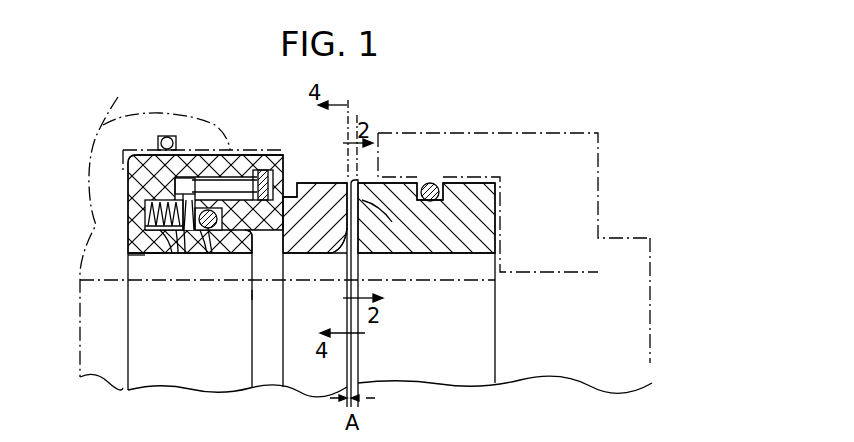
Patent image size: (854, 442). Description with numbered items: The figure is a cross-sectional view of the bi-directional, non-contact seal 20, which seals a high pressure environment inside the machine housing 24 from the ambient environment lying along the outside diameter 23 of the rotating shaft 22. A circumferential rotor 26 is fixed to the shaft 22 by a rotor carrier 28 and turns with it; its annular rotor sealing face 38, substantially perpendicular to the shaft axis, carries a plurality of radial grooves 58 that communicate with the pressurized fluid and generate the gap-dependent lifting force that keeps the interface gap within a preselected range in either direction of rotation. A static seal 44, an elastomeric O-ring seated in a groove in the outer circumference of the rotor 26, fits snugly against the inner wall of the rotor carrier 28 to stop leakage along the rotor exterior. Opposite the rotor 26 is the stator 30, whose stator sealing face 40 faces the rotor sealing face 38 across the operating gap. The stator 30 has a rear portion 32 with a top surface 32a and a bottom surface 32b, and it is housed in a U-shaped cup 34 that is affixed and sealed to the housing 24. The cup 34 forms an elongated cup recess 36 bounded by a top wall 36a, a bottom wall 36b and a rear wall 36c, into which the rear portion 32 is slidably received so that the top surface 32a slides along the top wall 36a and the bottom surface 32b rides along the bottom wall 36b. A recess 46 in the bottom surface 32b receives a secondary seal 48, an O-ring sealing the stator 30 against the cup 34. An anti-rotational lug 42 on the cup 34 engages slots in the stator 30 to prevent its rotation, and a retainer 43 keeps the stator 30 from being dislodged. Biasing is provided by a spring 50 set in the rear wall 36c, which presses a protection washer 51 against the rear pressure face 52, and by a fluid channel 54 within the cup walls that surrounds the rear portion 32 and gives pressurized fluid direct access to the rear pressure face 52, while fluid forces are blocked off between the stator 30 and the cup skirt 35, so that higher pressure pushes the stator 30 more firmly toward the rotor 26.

The bi-directional, non-contact seal 20 is at (535, 83).
The rotating shaft 22 is at (652, 363).
The outside diameter of shaft 23 is at (80, 272).
The machine housing 24 is at (181, 226).
The circumferential rotor 26 is at (495, 233).
The rotor carrier 28 is at (598, 188).
The stator 30 is at (297, 186).
The rear portion of stator 32 is at (205, 272).
The top surface of rear portion 32a is at (262, 157).
The bottom surface of rear portion 32b is at (192, 250).
The U-shaped cup 34 is at (128, 254).
The cup skirt 35 is at (264, 296).
The cup recess 36 is at (145, 212).
The top wall of cup recess 36a is at (194, 180).
The bottom wall of cup recess 36b is at (177, 258).
The rear wall of cup recess 36c is at (140, 256).
The rotor sealing face 38 is at (358, 237).
The stator sealing face 40 is at (335, 251).
The anti-rotational lug 42 is at (175, 184).
The retainer 43 is at (268, 186).
The static seal 44 is at (437, 183).
The recess 46 is at (210, 255).
The secondary seal 48 is at (222, 217).
The spring 50 is at (148, 228).
The protection washer 51 is at (184, 255).
The rear pressure face 52 is at (185, 178).
The fluid channel 54 is at (160, 206).
The radial grooves 58 is at (390, 217).